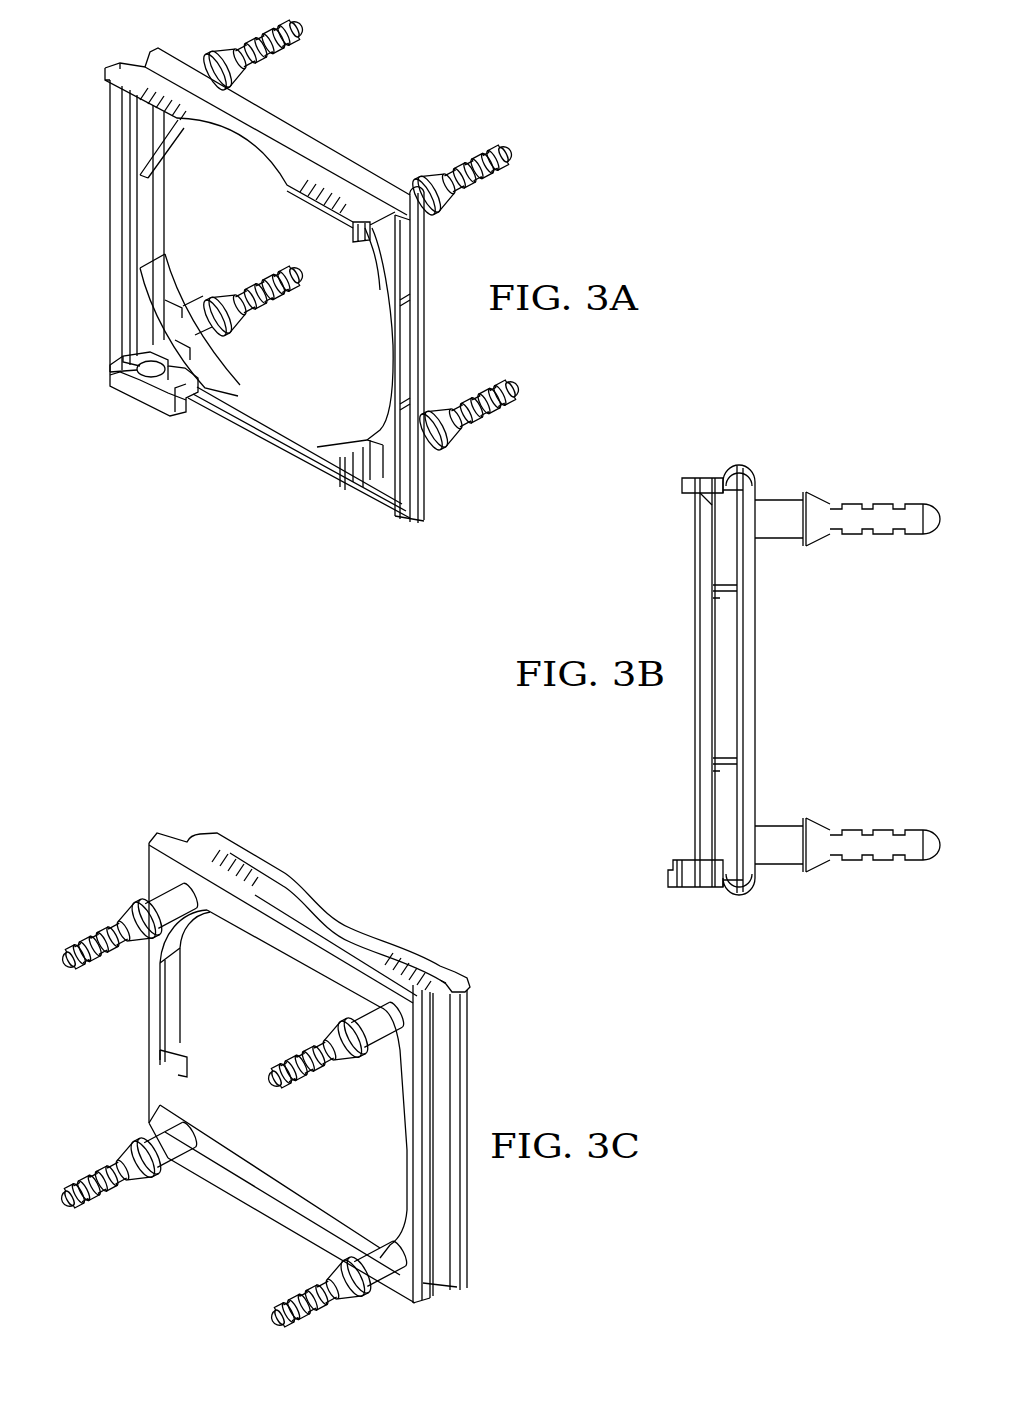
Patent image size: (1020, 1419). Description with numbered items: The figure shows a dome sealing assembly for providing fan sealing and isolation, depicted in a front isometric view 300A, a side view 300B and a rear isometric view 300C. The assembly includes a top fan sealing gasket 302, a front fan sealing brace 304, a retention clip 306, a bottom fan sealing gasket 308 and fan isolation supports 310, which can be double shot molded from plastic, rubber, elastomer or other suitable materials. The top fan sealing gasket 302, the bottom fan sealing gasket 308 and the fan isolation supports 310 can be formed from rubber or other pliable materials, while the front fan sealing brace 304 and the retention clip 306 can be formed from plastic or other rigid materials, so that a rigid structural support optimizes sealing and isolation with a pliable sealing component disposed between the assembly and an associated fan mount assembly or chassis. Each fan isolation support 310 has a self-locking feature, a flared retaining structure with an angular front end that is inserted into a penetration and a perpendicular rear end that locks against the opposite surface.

In FIG. 3A, the front isometric view 300A is at (266, 486).
In FIG. 3B, the side view 300B is at (636, 776).
In FIG. 3C, the rear isometric view 300C is at (198, 1282).
In FIG. 3B, the top fan sealing gasket 302 is at (746, 468).
In FIG. 3A, the front fan sealing brace 304 is at (105, 226).
In FIG. 3A, the retention clip 306 is at (130, 403).
In FIG. 3B, the bottom fan sealing gasket 308 is at (748, 898).
In FIG. 3C, the fan isolation supports 310 is at (318, 1313).